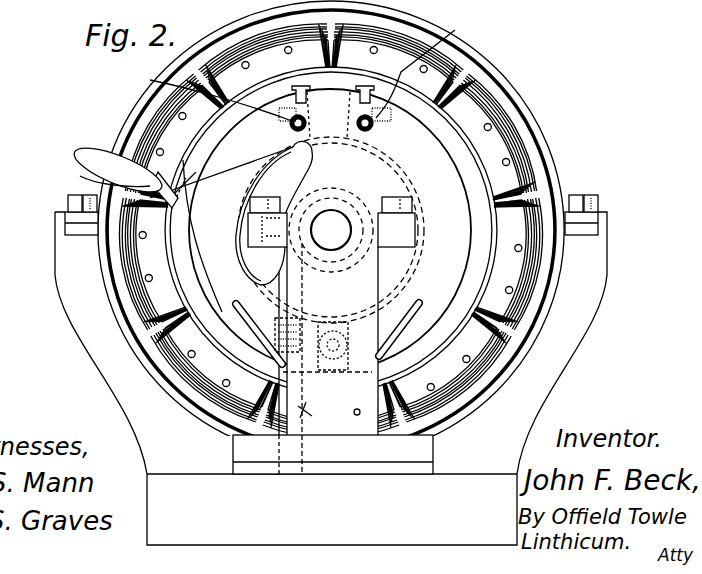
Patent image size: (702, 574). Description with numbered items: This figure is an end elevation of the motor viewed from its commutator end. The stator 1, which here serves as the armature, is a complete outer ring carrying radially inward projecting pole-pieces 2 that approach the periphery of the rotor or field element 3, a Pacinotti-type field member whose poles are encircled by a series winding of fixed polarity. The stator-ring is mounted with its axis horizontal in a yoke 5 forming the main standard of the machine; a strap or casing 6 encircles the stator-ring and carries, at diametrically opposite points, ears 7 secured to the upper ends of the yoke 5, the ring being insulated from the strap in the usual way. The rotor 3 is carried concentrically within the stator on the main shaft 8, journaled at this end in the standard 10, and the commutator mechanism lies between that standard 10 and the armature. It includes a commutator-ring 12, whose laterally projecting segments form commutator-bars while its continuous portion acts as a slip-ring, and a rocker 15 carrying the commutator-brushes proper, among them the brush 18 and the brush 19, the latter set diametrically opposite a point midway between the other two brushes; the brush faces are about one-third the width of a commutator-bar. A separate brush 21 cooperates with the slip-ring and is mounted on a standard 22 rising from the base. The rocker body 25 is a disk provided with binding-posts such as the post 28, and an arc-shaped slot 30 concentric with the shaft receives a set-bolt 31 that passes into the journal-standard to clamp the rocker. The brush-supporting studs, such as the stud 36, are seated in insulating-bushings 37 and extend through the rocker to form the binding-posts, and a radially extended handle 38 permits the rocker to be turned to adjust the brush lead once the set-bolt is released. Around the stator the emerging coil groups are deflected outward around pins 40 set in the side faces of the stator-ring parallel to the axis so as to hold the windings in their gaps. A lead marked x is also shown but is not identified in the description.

The stator 1 is at (147, 116).
The pole-pieces 2 is at (330, 231).
The rotor or field element 3 is at (483, 165).
The yoke 5 is at (568, 362).
The strap or casing 6 is at (556, 163).
The ears 7 is at (70, 212).
The main shaft 8 is at (331, 230).
The standard 10 is at (333, 360).
The commutator-ring 12 is at (274, 213).
The rocker 15 is at (330, 230).
The commutator-brush 18 is at (303, 94).
The commutator-brush 19 is at (314, 386).
The brush 21 is at (302, 358).
The standard 22 is at (329, 411).
The rocker body 25 is at (421, 259).
The binding-post 28 is at (210, 93).
The arc-shaped slot 30 is at (416, 300).
The set-bolt 31 is at (299, 335).
The brush-supporting stud 36 is at (346, 345).
The insulating-bushings 37 is at (328, 115).
The handle 38 is at (181, 225).
The pins 40 is at (147, 238).
The lead wire x is at (455, 30).